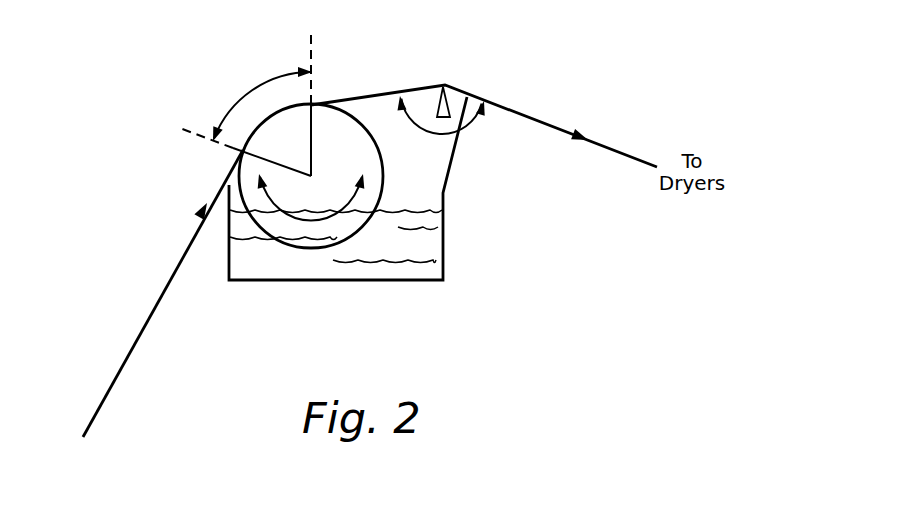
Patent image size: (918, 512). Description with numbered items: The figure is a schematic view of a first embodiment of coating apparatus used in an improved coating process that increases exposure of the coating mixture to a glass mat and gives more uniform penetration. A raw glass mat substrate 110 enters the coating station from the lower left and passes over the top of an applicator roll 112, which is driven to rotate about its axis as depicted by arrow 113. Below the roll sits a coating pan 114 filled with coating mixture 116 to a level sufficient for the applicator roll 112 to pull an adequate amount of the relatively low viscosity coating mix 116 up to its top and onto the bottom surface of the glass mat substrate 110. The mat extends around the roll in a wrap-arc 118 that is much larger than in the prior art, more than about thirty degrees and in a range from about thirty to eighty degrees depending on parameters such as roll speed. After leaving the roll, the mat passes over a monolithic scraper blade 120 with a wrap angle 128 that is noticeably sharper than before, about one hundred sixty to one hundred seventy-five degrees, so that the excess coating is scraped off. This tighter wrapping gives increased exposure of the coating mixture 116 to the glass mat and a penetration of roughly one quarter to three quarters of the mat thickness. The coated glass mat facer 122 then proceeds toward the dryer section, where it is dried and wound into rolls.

The glass mat substrate 110 is at (167, 285).
The applicator roll 112 is at (356, 112).
The arrow 113 is at (326, 222).
The coating pan 114 is at (415, 281).
The coating mixture 116 is at (423, 246).
The wrap-arc 118 is at (248, 97).
The scraper blade 120 is at (448, 107).
The coated glass mat facer 122 is at (540, 119).
The wrap angle 128 is at (468, 113).